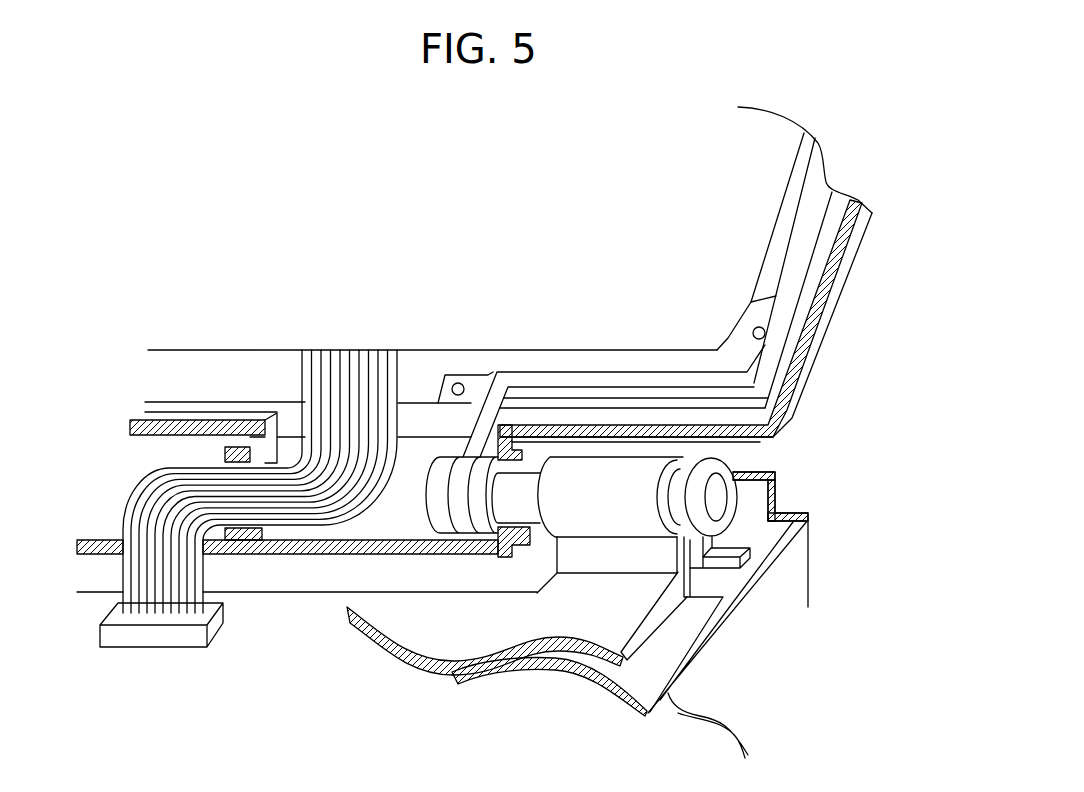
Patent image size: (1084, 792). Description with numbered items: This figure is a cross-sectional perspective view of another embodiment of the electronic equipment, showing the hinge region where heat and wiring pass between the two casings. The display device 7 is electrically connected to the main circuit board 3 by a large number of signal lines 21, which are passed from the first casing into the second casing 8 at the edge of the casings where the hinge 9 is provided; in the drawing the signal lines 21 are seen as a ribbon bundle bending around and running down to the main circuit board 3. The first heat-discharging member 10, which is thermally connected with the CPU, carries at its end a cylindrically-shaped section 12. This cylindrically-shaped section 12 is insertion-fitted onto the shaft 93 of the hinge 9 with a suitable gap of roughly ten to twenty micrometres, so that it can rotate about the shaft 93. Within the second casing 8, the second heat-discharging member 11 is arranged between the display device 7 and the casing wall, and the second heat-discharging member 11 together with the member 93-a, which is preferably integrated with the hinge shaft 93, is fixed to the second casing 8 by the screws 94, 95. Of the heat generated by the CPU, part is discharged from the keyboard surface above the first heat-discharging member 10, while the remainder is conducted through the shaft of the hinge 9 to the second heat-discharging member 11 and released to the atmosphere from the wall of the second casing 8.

The main circuit board 3 is at (236, 636).
The display device 7 is at (758, 130).
The second casing 8 is at (826, 318).
The hinge 9 is at (715, 494).
The first heat-discharging member 10 is at (424, 636).
The second heat-discharging member 11 is at (170, 368).
The cylindrically-shaped section 12 is at (570, 525).
The signal lines 21 is at (142, 493).
The shaft 93 is at (507, 502).
The member 93-a is at (596, 378).
The screw 94 is at (458, 382).
The screw 95 is at (757, 332).